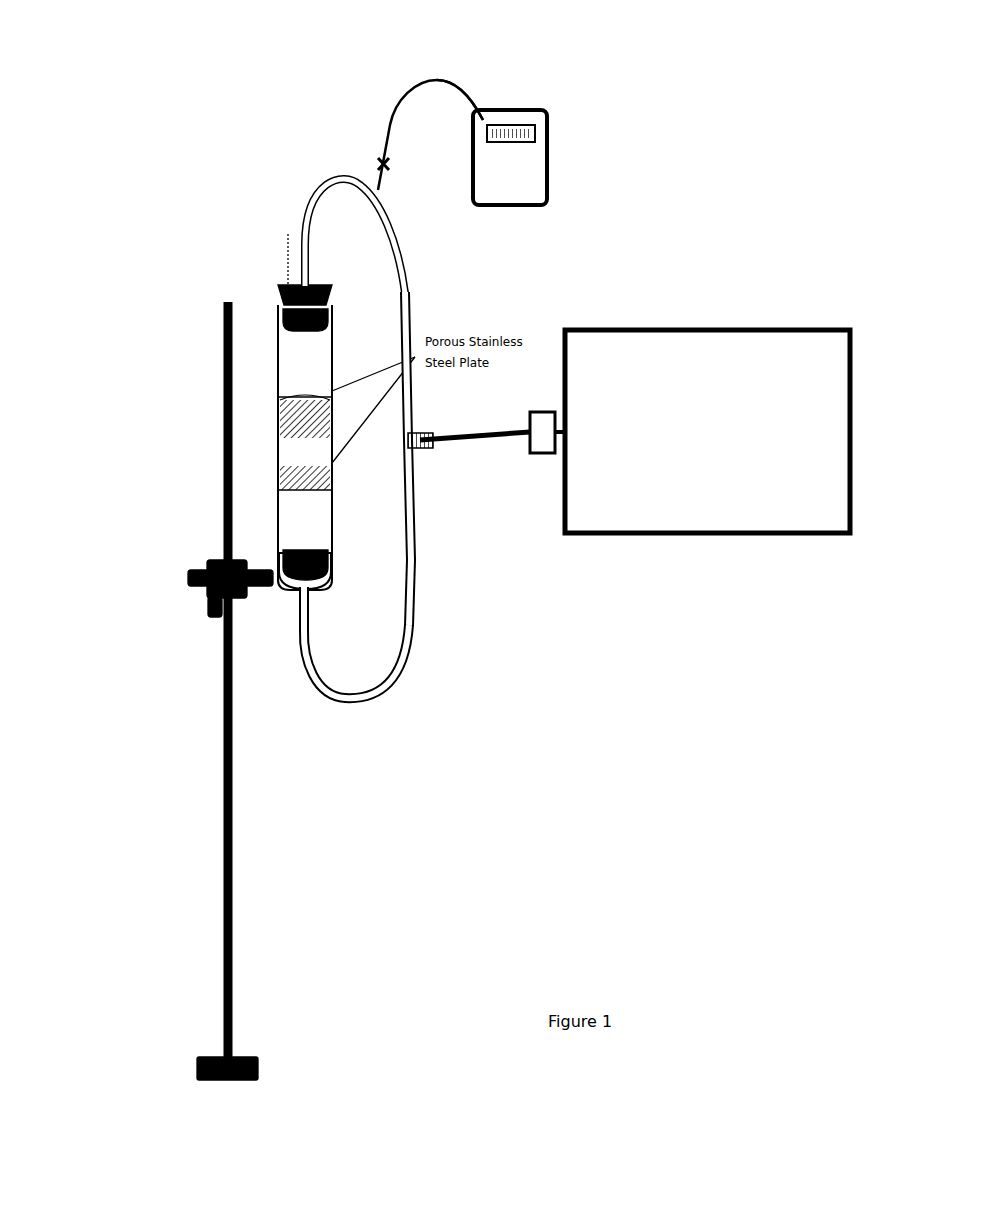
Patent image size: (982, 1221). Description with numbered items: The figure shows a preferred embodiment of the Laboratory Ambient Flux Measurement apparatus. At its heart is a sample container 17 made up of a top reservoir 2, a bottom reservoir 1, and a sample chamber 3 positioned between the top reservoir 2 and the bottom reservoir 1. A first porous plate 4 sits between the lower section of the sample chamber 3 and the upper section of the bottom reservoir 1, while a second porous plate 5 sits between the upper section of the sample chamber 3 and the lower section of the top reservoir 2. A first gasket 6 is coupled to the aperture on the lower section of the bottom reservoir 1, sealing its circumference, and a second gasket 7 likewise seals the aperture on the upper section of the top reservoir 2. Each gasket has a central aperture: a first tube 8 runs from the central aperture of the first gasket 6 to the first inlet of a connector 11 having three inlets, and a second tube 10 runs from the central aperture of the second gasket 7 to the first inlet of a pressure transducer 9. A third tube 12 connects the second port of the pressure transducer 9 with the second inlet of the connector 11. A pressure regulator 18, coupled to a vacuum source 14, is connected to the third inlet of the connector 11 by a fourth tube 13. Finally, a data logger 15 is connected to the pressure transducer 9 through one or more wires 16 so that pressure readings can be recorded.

The bottom reservoir 1 is at (276, 518).
The top reservoir 2 is at (278, 342).
The sample chamber 3 is at (276, 435).
The first porous plate 4 is at (276, 488).
The second porous plate 5 is at (276, 403).
The first gasket 6 is at (283, 593).
The second gasket 7 is at (277, 287).
The first tube 8 is at (370, 693).
The pressure transducer 9 is at (377, 180).
The second tube 10 is at (345, 173).
The connector 11 is at (422, 453).
The third tube 12 is at (407, 268).
The fourth tube 13 is at (518, 440).
The vacuum source 14 is at (640, 325).
The data logger 15 is at (525, 123).
The wires 16 is at (452, 80).
The sample container 17 is at (70, 252).
The pressure regulator 18 is at (545, 410).